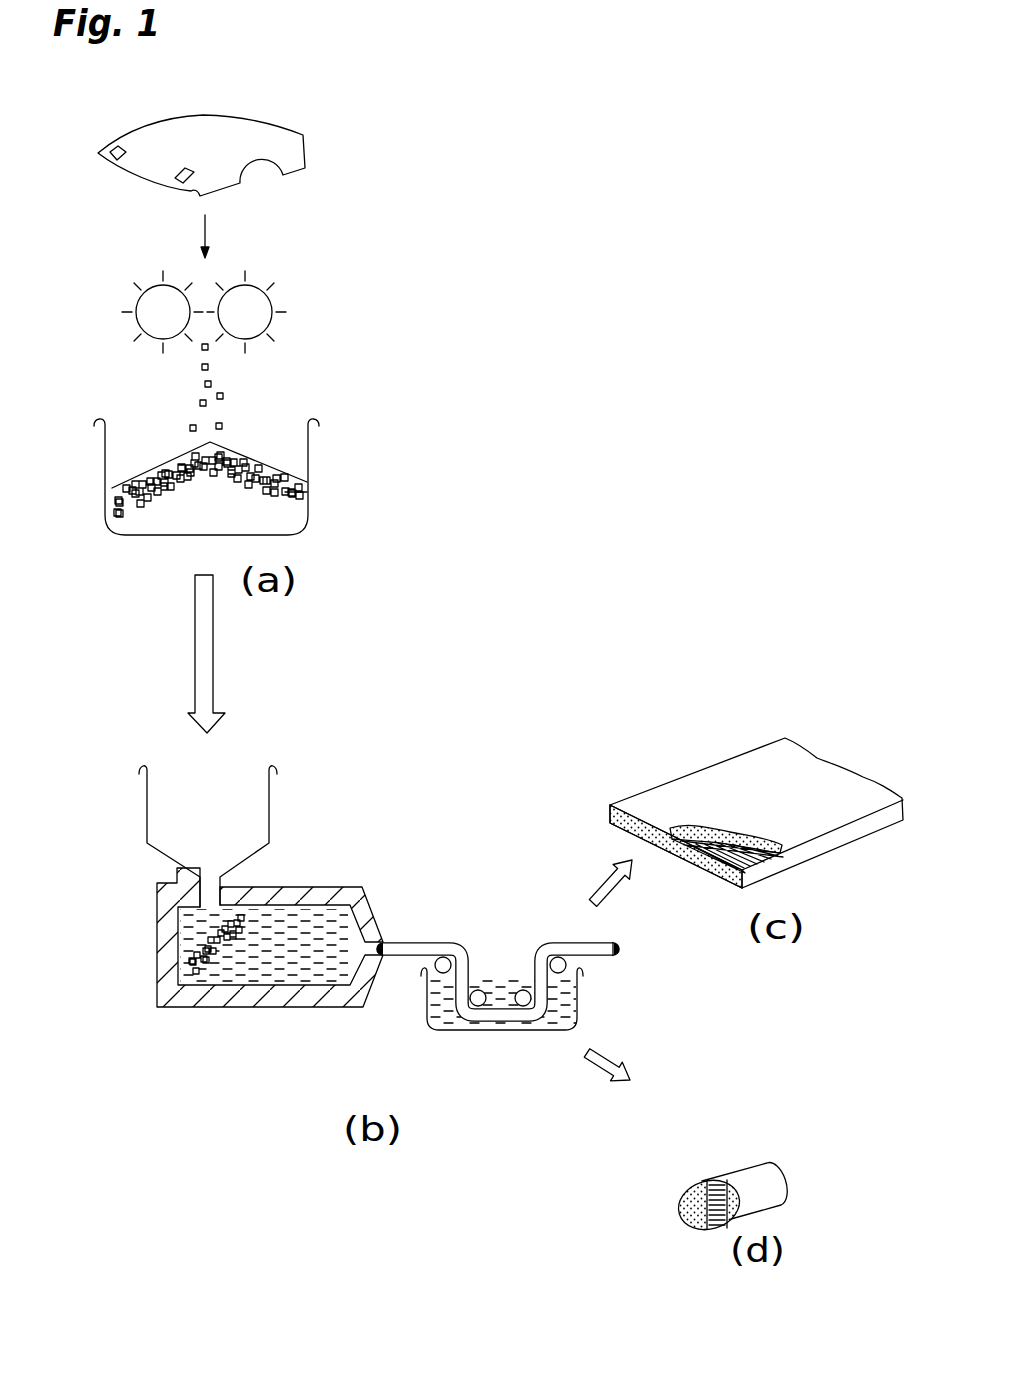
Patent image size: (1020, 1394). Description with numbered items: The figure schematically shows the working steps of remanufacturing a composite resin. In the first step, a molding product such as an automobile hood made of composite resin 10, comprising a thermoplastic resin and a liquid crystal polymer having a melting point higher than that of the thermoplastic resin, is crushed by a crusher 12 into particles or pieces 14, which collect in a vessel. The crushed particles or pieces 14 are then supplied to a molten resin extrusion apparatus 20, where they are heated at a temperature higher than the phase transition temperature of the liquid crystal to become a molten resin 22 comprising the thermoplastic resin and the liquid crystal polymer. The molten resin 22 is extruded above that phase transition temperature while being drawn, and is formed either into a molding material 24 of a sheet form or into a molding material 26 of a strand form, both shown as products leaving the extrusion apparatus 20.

The composite resin 10 is at (140, 178).
The crusher 12 is at (138, 300).
The crushed particles or pieces 14 is at (198, 403).
The molten resin extrusion apparatus 20 is at (320, 887).
The molten resin 22 is at (283, 968).
The molding material of a sheet form 24 is at (690, 775).
The molding material of a strand form 26 is at (731, 1169).